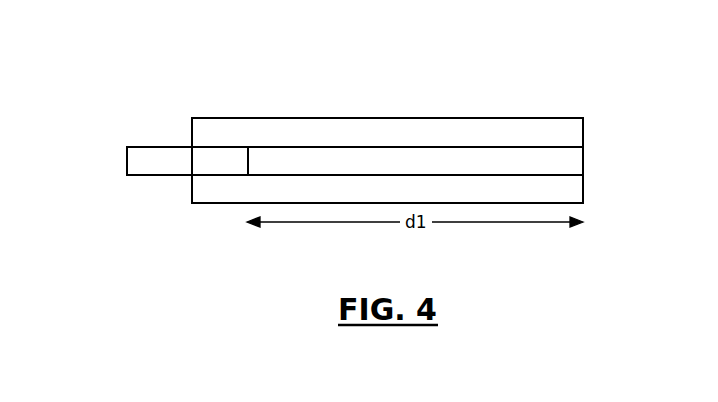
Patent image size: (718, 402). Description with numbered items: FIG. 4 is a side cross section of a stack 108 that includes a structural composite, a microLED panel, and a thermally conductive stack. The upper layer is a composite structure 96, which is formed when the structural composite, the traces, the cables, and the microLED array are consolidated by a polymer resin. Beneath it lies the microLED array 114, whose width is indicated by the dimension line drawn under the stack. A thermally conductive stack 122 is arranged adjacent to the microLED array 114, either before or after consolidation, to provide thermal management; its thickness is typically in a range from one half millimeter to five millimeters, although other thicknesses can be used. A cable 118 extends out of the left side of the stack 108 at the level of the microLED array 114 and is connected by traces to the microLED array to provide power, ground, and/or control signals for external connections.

The stack 108 is at (478, 80).
The composite structure 96 is at (584, 132).
The microLED array 114 is at (584, 160).
The thermally conductive stack 122 is at (584, 189).
The cable 118 is at (147, 146).